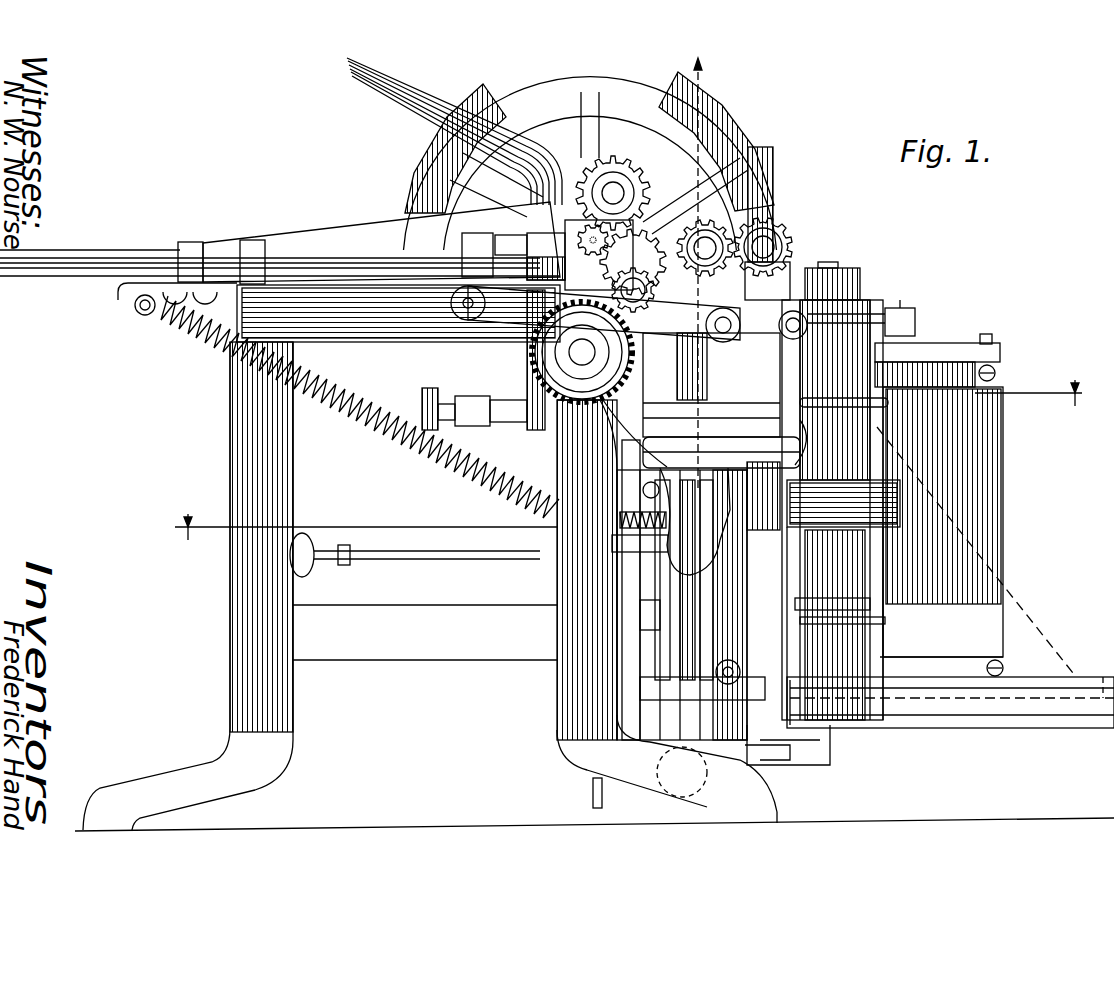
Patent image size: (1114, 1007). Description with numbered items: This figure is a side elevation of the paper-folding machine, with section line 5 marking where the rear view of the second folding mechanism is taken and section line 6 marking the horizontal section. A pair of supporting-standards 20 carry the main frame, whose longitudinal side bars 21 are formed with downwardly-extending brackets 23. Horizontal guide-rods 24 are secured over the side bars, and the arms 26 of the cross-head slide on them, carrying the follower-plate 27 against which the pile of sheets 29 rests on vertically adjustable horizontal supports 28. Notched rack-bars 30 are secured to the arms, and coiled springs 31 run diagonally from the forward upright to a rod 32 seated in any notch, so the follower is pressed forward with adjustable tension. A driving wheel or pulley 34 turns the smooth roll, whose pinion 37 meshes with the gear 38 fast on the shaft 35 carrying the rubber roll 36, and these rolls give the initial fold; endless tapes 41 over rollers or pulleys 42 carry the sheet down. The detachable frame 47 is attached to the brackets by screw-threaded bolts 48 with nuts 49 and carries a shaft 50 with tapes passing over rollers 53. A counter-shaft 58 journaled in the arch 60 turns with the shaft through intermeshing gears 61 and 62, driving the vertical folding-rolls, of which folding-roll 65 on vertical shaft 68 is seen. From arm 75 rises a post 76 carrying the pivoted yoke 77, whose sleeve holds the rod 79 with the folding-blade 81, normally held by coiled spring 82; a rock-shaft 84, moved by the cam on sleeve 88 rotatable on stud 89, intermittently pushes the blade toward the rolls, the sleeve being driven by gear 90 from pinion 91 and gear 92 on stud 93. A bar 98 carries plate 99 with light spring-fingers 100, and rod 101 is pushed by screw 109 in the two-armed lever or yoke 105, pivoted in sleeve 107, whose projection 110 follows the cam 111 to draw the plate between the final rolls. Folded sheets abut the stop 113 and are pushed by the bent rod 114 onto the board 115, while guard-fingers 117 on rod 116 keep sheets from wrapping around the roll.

The section line 5 is at (696, 262).
The section line 6 is at (626, 460).
The supporting-standards 20 is at (280, 708).
The side bars 21 is at (372, 330).
The brackets 23 is at (577, 433).
The guide-rods 24 is at (112, 255).
The arms 26 is at (300, 240).
The follower-plate 27 is at (407, 95).
The horizontal supports 28 is at (393, 527).
The pile of sheets 29 is at (432, 92).
The rack-bars 30 is at (125, 295).
The coiled springs 31 is at (352, 425).
The rod 32 is at (145, 318).
The driving wheel or pulley 34 is at (720, 130).
The shaft 35 is at (614, 185).
The roll 36 is at (678, 325).
The pinion 37 is at (567, 232).
The gear 38 is at (640, 175).
The endless tapes 41 is at (655, 628).
The rollers or pulleys 42 is at (652, 749).
The frame 47 is at (706, 580).
The screw-threaded bolts 48 is at (795, 428).
The nuts 49 is at (830, 512).
The shaft 50 is at (706, 240).
The pulleys or rollers 53 is at (726, 657).
The counter-shaft 58 is at (766, 244).
The arch 60 is at (770, 175).
The gear 61 is at (745, 272).
The gear 62 is at (790, 247).
The folding-roll 65 is at (836, 575).
The vertical shaft 68 is at (832, 268).
The arm 75 is at (770, 758).
The post 76 is at (680, 641).
The yoke 77 is at (670, 682).
The rod 79 is at (666, 513).
The folding-blade 81 is at (648, 615).
The coiled spring 82 is at (620, 548).
The rock-shaft 84 is at (728, 336).
The sleeve 88 is at (582, 354).
The stud 89 is at (543, 418).
The gear 90 is at (480, 362).
The pinion 91 is at (618, 292).
The gear 92 is at (578, 285).
The stud 93 is at (633, 262).
The bar 98 is at (985, 334).
The plate 99 is at (1003, 497).
The spring-fingers 100 is at (1005, 357).
The rod 101 is at (885, 314).
The two-armed lever or yoke 105 is at (760, 460).
The sleeve 107 is at (725, 410).
The screw 109 is at (802, 318).
The projection 110 is at (625, 445).
The cam 111 is at (452, 305).
The stop 113 is at (900, 482).
The bent rod 114 is at (800, 606).
The board 115 is at (980, 712).
The rod 116 is at (886, 656).
The guard-fingers 117 is at (885, 404).